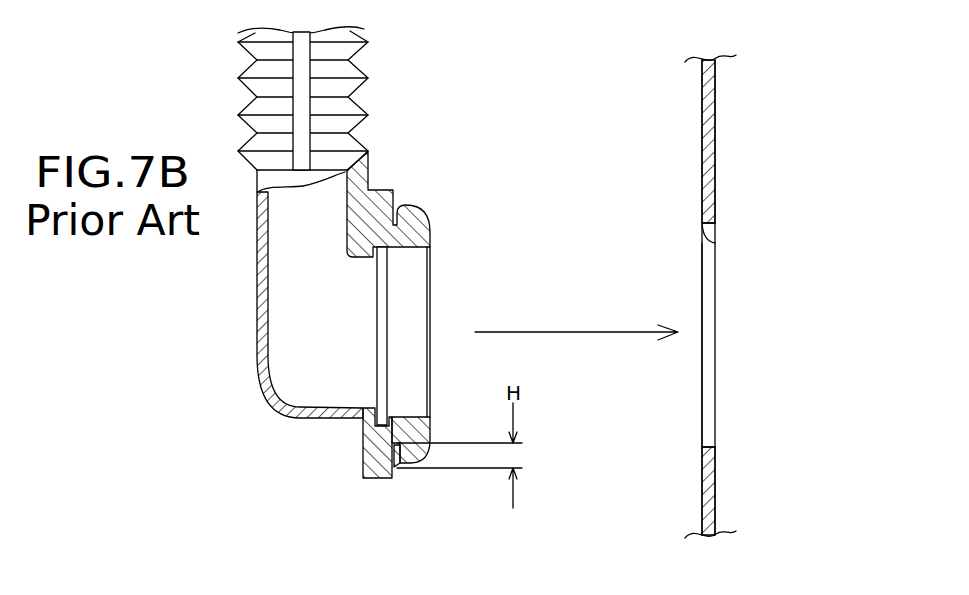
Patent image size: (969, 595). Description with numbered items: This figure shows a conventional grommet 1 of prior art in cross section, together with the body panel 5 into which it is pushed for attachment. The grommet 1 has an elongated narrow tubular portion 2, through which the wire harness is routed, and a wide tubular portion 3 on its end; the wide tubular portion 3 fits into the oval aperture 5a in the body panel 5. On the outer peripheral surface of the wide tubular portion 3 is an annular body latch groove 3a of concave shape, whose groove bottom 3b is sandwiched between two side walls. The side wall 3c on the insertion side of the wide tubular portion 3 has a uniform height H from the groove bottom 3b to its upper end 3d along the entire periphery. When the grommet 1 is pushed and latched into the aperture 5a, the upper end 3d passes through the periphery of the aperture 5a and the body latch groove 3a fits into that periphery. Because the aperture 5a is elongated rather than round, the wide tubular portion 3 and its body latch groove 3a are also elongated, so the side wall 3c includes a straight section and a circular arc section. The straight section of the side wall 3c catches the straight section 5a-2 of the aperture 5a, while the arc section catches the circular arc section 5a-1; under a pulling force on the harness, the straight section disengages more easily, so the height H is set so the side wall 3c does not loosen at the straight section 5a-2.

The grommet 1 is at (212, 83).
The elongated narrow tubular portion 2 is at (347, 68).
The wide tubular portion 3 is at (355, 427).
The body latch groove 3a is at (393, 445).
The groove bottom 3b is at (395, 443).
The side wall 3c is at (407, 462).
The upper end 3d is at (403, 463).
The body panel 5 is at (713, 145).
The oval aperture 5a is at (715, 415).
The circular arc section 5a-1 is at (707, 333).
The straight section 5a-2 is at (715, 243).